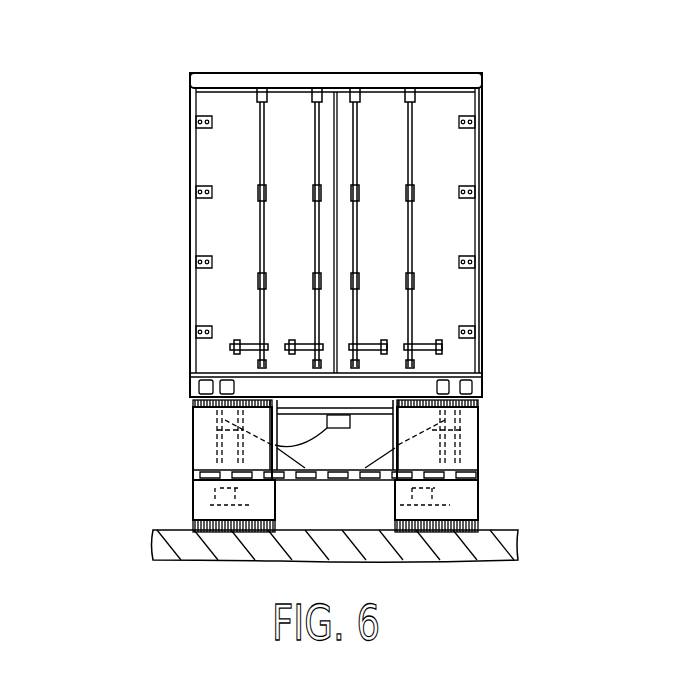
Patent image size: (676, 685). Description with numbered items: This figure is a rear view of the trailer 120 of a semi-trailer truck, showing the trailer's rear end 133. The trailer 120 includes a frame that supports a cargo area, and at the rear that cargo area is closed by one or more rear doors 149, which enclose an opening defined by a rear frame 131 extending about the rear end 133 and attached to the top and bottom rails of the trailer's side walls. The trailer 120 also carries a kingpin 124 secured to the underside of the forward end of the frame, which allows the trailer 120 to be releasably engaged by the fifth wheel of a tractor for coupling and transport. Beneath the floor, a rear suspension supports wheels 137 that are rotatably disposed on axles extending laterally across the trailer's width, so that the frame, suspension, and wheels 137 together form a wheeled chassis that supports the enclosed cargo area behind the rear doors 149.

The trailer 120 is at (132, 237).
The rear frame 131 is at (283, 76).
The rear end 133 is at (487, 286).
The rear doors 149 is at (203, 305).
The kingpin 124 is at (308, 468).
The wheels 137 is at (193, 507).